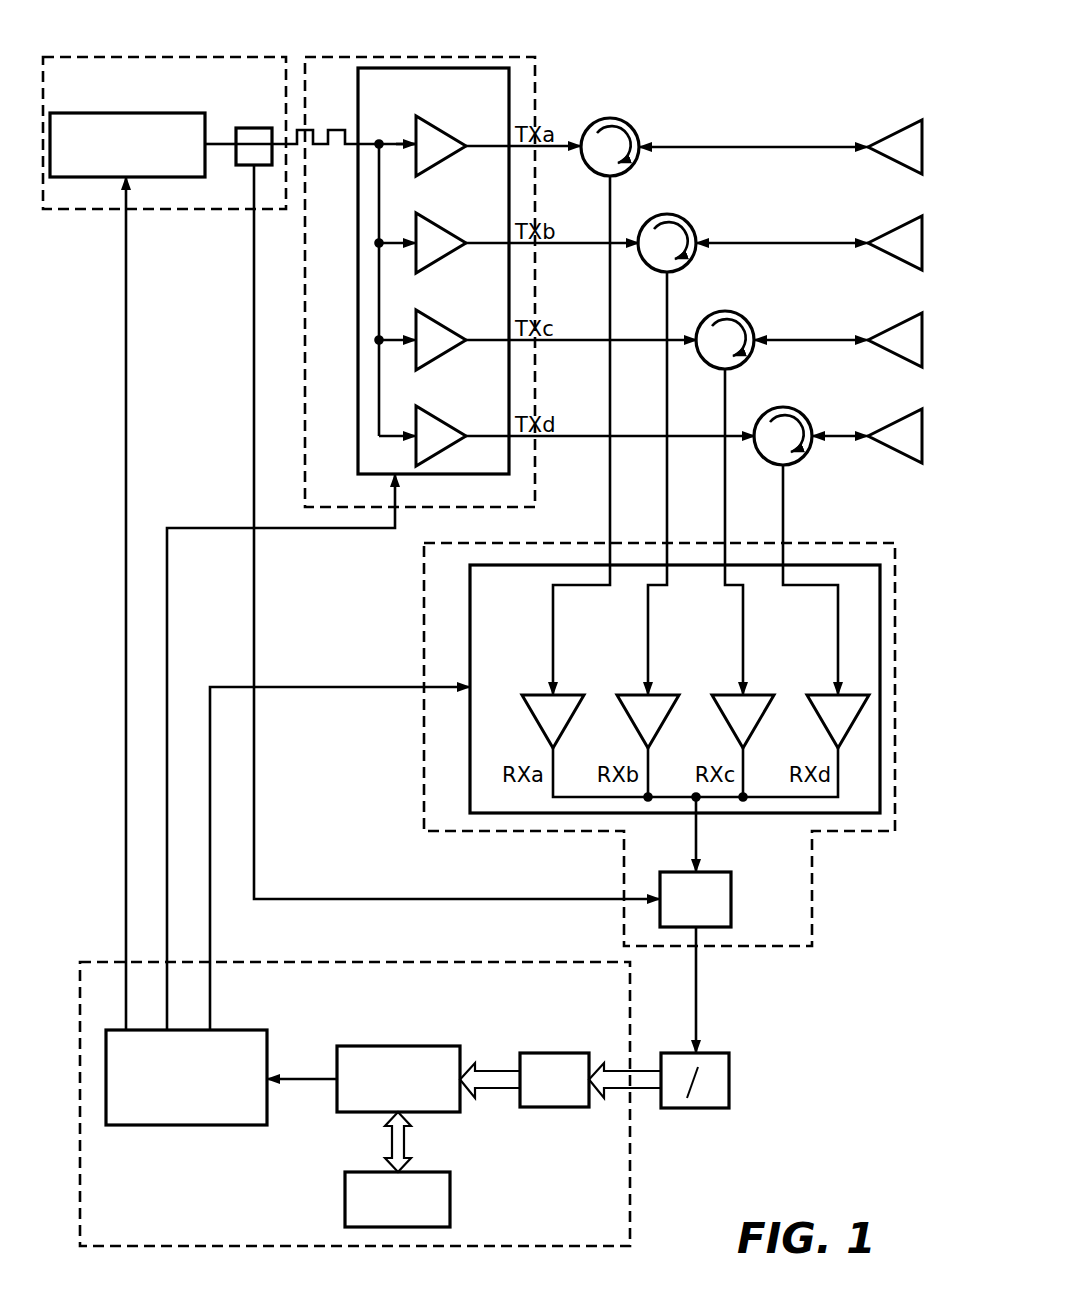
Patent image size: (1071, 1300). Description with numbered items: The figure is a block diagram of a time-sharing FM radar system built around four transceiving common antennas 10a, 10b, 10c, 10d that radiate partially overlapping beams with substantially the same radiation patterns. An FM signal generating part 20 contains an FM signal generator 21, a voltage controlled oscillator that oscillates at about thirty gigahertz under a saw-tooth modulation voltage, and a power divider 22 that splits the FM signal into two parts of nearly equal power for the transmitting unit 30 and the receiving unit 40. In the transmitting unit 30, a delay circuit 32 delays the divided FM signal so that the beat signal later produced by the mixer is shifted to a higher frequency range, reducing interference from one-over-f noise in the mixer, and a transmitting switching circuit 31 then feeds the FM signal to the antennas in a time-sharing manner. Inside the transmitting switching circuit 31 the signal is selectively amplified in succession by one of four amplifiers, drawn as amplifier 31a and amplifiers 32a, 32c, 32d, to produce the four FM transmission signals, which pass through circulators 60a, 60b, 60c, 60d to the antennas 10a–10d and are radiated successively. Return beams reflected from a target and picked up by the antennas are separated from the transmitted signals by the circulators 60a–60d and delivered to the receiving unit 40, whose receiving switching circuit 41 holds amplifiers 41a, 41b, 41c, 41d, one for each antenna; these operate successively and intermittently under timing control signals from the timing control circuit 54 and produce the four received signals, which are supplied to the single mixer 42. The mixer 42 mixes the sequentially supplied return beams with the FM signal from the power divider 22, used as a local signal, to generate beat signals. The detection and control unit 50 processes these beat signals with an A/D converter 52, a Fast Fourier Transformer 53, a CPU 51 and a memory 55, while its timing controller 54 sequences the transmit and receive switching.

The FM signal generating part 20 is at (112, 57).
The FM signal generator 21 is at (97, 113).
The power divider 22 is at (258, 128).
The transmitting unit 30 is at (345, 57).
The transmitting switching circuit 31 is at (448, 68).
The delay circuit 32 is at (318, 128).
The amplifier 31a is at (428, 122).
The transmitting amplifier b 32a is at (428, 218).
The transmitting amplifier c 32c is at (428, 315).
The transmitting amplifier d 32d is at (428, 411).
The circulator 60a is at (612, 119).
The circulator 60b is at (670, 215).
The circulator 60c is at (728, 312).
The circulator 60d is at (790, 408).
The transceiving common antenna 10a is at (893, 120).
The transceiving common antenna 10b is at (893, 217).
The transceiving common antenna 10c is at (893, 313).
The transceiving common antenna 10d is at (893, 409).
The receiving unit 40 is at (895, 831).
The receiving switching circuit 41 is at (843, 565).
The amplifier 41a is at (548, 694).
The amplifier 41b is at (643, 694).
The amplifier 41c is at (738, 694).
The amplifier 41d is at (833, 694).
The mixer 42 is at (718, 872).
The detection and control unit 50 is at (290, 962).
The CPU 51 is at (402, 1046).
The A/D converter 52 is at (718, 1053).
The Fast Fourier Transformer 53 is at (548, 1053).
The timing controller 54 is at (240, 1030).
The memory 55 is at (428, 1172).